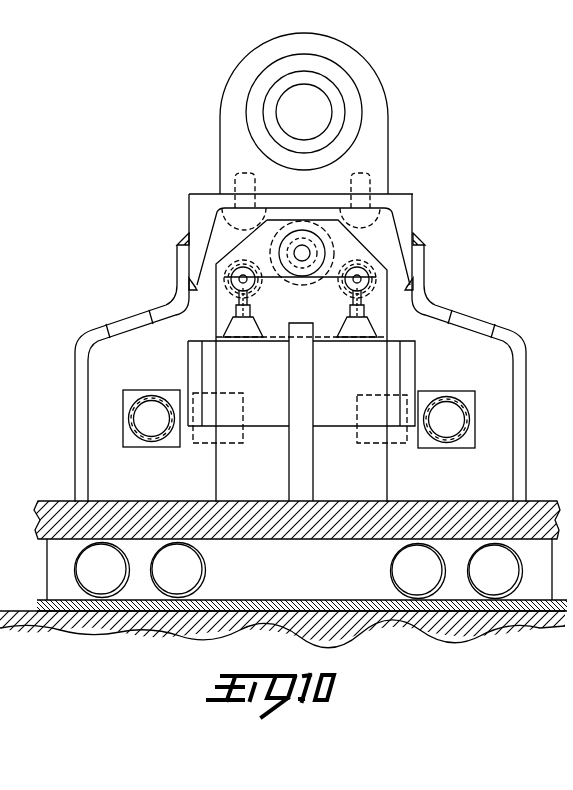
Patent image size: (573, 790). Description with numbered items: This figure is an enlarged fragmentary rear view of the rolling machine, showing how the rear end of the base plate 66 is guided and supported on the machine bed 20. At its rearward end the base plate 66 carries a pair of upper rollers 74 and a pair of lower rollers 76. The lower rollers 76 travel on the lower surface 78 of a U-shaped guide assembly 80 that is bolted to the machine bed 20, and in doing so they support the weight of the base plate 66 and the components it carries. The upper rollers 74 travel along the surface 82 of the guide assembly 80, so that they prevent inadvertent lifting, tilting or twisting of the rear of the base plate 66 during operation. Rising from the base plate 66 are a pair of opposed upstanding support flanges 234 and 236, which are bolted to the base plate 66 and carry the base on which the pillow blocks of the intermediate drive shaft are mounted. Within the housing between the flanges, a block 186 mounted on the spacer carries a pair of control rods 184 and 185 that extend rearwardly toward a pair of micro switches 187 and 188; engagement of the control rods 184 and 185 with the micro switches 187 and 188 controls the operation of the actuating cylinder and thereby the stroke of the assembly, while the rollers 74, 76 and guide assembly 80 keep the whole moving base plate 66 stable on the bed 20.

The bed 20 is at (127, 633).
The base plate 66 is at (298, 597).
The upper rollers 74 is at (204, 561).
The lower rollers 76 is at (76, 587).
The lower surface 78 is at (273, 600).
The U-shaped guide assembly 80 is at (62, 497).
The surface 82 is at (289, 541).
The control rod 184 is at (224, 277).
The control rod 185 is at (376, 277).
The block 186 is at (350, 243).
The micro switch 187 is at (188, 362).
The micro switch 188 is at (407, 371).
The support flange 234 is at (85, 333).
The support flange 236 is at (527, 407).